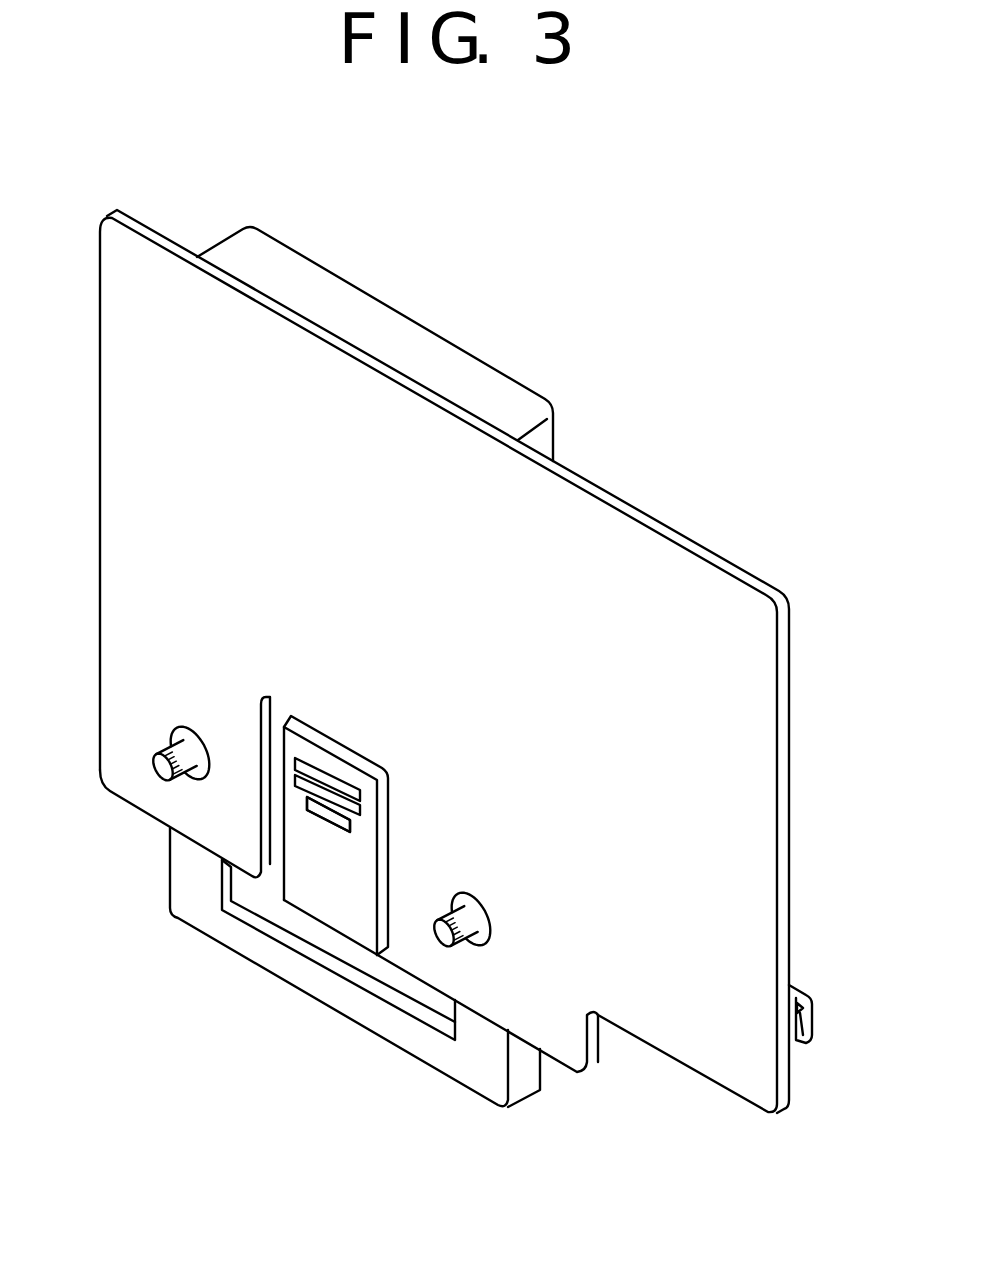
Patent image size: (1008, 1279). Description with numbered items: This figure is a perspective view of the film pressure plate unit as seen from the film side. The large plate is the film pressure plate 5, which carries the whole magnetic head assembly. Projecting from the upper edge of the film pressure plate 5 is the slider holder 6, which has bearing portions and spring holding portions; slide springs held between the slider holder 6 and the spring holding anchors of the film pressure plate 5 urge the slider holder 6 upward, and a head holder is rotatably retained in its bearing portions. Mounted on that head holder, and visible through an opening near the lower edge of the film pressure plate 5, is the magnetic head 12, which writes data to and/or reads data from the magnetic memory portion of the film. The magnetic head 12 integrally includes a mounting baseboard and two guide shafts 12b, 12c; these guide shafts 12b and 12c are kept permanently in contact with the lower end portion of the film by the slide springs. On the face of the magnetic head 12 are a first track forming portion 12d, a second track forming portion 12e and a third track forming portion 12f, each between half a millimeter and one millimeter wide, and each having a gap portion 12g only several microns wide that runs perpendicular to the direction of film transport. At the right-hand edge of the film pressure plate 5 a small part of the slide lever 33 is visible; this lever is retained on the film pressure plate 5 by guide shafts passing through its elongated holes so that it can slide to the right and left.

The film pressure plate 5 is at (668, 560).
The slider holder 6 is at (473, 361).
The magnetic head 12 is at (328, 908).
The guide shaft 12b is at (437, 947).
The guide shaft 12c is at (153, 782).
The first track forming portion 12d is at (351, 829).
The second track forming portion 12e is at (361, 813).
The third track forming portion 12f is at (361, 799).
The gap portion 12g is at (328, 782).
The slide lever 33 is at (812, 1020).